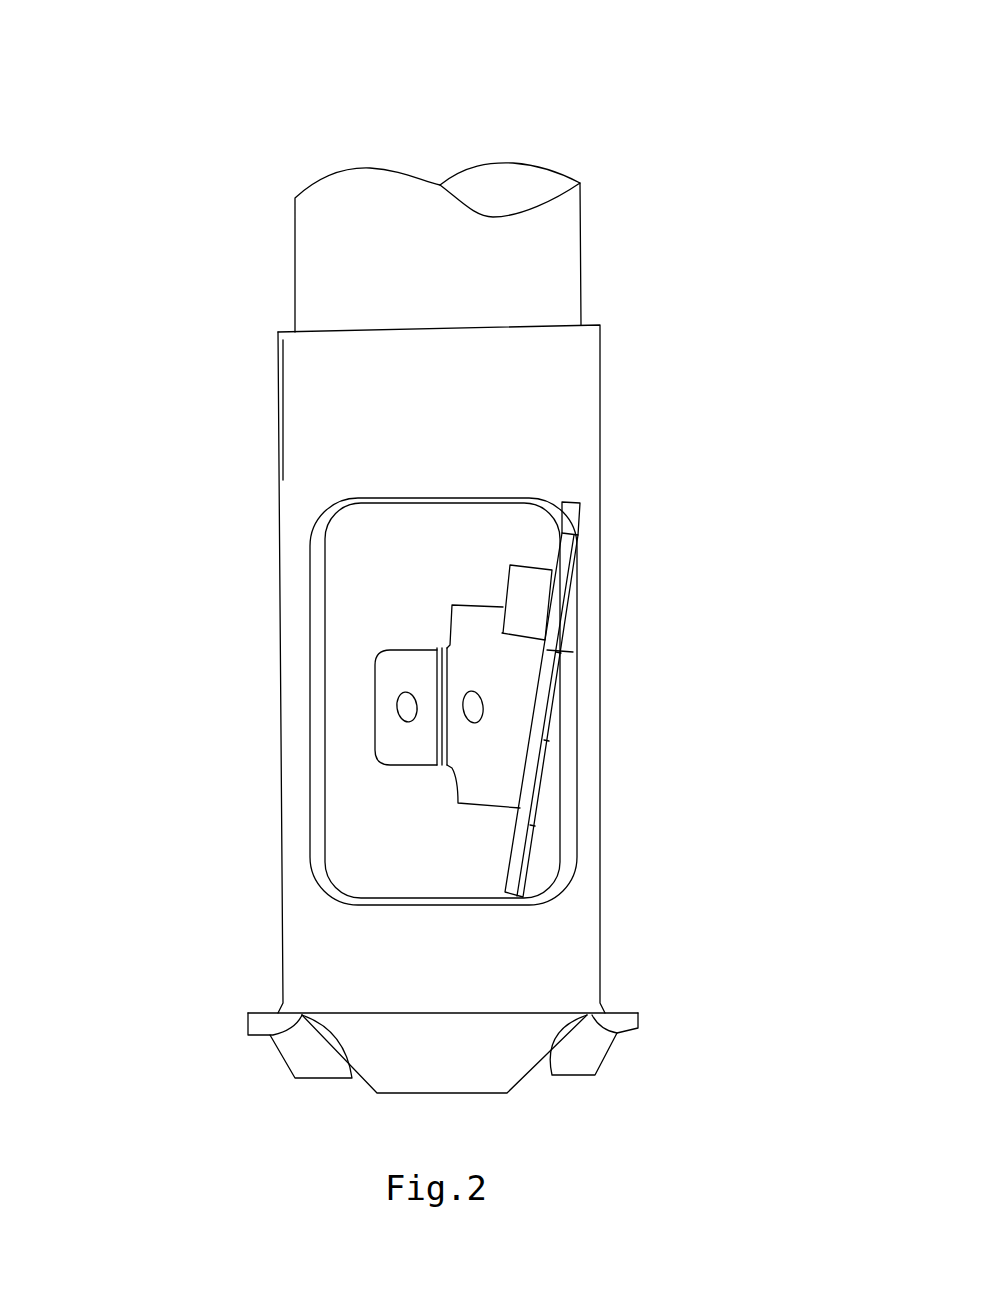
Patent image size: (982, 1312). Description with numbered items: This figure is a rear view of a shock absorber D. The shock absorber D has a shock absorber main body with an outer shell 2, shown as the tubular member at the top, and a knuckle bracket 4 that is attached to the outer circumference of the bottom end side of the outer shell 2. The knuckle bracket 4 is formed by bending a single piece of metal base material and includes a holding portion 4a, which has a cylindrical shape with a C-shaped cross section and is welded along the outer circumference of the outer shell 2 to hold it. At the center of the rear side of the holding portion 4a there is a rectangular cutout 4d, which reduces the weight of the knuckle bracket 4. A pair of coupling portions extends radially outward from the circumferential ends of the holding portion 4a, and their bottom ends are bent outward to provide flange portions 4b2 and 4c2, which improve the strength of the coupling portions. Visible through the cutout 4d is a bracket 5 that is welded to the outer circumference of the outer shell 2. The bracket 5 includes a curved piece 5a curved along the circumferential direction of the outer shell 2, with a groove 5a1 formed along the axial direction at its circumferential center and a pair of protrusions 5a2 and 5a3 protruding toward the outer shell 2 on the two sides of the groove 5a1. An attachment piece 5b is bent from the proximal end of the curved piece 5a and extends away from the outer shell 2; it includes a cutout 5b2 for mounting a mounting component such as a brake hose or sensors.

The shock absorber D is at (234, 153).
The outer shell 2 is at (560, 243).
The knuckle bracket 4 is at (615, 370).
The holding portion 4a is at (305, 377).
The flange portion 4b2 is at (248, 1023).
The flange portion 4c2 is at (638, 1020).
The cutout 4d is at (330, 845).
The bracket 5 is at (615, 542).
The curved piece 5a is at (345, 684).
The groove 5a1 is at (435, 660).
The protrusion 5a2 is at (407, 714).
The protrusion 5a3 is at (482, 716).
The attachment piece 5b is at (560, 840).
The cutout 5b2 is at (560, 690).